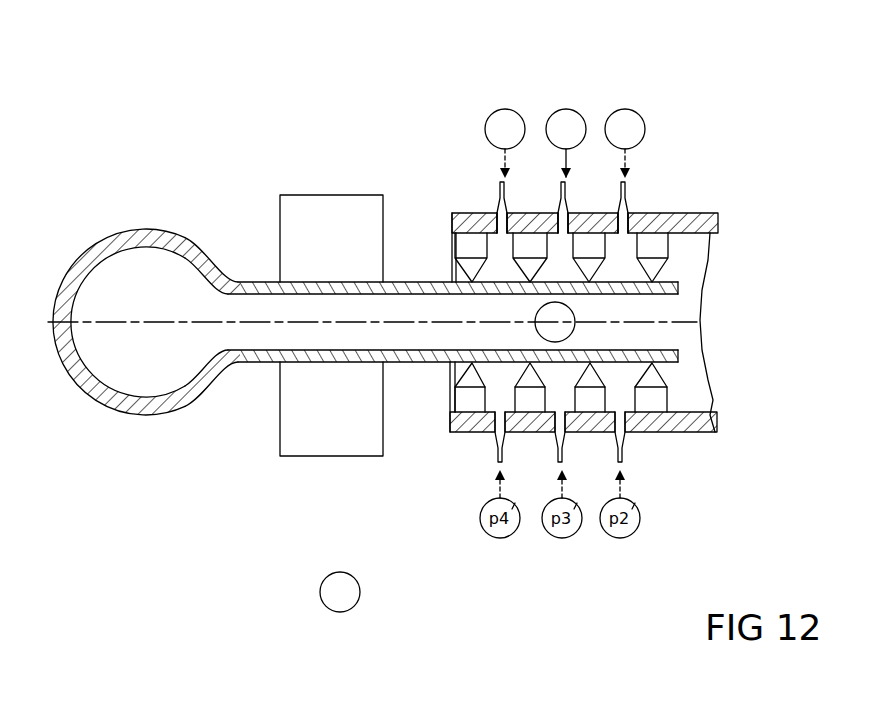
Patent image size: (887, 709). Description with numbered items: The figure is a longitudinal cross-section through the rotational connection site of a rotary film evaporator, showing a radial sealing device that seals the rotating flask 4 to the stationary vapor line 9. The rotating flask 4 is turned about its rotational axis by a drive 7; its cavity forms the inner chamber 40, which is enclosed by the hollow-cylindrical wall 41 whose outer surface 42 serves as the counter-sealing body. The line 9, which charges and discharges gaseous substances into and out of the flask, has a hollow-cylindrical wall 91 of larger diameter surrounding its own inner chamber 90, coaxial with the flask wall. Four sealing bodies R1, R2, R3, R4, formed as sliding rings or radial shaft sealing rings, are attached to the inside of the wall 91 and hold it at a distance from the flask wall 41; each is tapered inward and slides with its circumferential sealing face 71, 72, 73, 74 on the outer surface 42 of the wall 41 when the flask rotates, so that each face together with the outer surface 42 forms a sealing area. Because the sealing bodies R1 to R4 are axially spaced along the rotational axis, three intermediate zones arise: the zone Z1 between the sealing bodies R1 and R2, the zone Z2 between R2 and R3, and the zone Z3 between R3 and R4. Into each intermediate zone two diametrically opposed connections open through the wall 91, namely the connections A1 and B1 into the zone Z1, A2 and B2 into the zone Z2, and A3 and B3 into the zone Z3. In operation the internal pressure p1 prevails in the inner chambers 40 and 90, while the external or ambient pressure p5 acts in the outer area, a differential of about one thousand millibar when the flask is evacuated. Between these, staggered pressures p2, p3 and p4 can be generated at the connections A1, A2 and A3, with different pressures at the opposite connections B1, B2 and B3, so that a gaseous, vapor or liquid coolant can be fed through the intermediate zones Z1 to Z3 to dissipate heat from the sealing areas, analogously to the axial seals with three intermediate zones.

The rotating flask 4 is at (135, 267).
The drive 7 is at (367, 200).
The line 9 is at (702, 432).
The inner chamber 40 is at (658, 313).
The wall 41 is at (333, 363).
The outer surface 42 is at (442, 282).
The sealing face 71 is at (652, 363).
The sealing face 72 is at (608, 338).
The sealing face 73 is at (530, 363).
The sealing face 74 is at (472, 363).
The inner chamber 90 is at (697, 272).
The wall 91 is at (706, 214).
The connection A1 is at (627, 190).
The connection A2 is at (566, 196).
The connection A3 is at (500, 193).
The connection B1 is at (622, 453).
The connection B2 is at (562, 452).
The connection B3 is at (498, 448).
The sealing body R1 is at (652, 403).
The sealing body R2 is at (597, 403).
The sealing body R3 is at (533, 403).
The sealing body R4 is at (467, 403).
The intermediate zone Z1 is at (613, 240).
The intermediate zone Z2 is at (557, 250).
The intermediate zone Z3 is at (505, 252).
The internal pressure p1 is at (555, 322).
The pressure p2 is at (625, 143).
The pressure p3 is at (566, 143).
The pressure p4 is at (505, 143).
The external pressure p5 is at (340, 592).